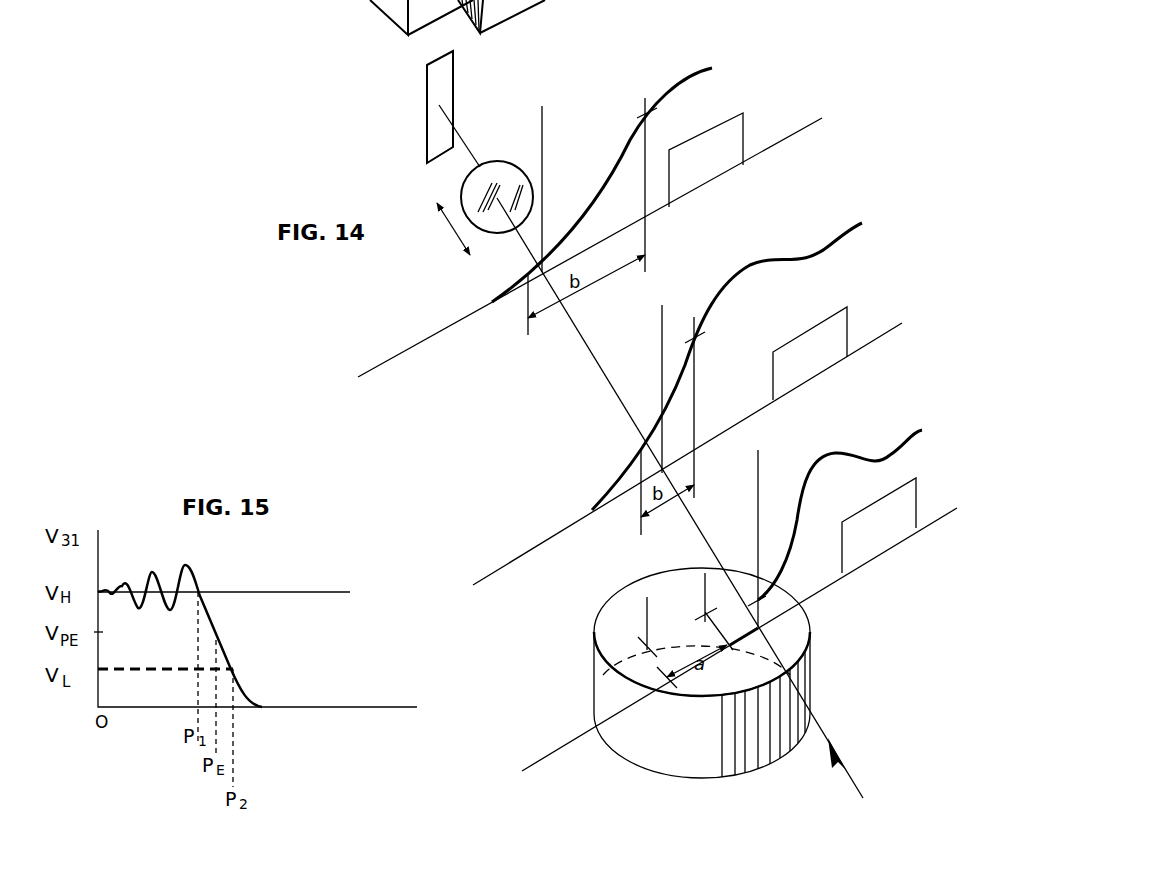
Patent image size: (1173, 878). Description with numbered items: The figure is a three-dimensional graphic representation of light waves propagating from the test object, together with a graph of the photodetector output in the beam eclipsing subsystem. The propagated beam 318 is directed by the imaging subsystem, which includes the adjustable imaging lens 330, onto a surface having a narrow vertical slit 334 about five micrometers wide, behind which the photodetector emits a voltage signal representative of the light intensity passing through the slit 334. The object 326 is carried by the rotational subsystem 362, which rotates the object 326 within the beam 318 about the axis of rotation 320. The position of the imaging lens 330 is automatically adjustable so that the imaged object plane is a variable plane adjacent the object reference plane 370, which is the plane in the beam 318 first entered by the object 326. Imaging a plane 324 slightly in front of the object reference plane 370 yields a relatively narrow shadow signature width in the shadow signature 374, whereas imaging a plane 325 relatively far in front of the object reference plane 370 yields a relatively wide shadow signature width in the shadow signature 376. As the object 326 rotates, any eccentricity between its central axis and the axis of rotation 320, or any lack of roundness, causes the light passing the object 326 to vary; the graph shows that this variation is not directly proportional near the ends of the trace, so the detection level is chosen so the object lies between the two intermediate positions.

The beam 318 is at (703, 585).
The axis of rotation 320 is at (645, 623).
The plane slightly in front of the ORP 324 is at (812, 354).
The plane relatively far in front of the ORP 325 is at (707, 158).
The object 326 is at (727, 767).
The imaging lens 330 is at (495, 160).
The narrow vertical slit 334 is at (425, 115).
The rotational subsystem 362 is at (755, 600).
The object reference plane (ORP) 370 is at (882, 530).
The shadow signature 374 is at (777, 262).
The shadow signature 376 is at (685, 77).